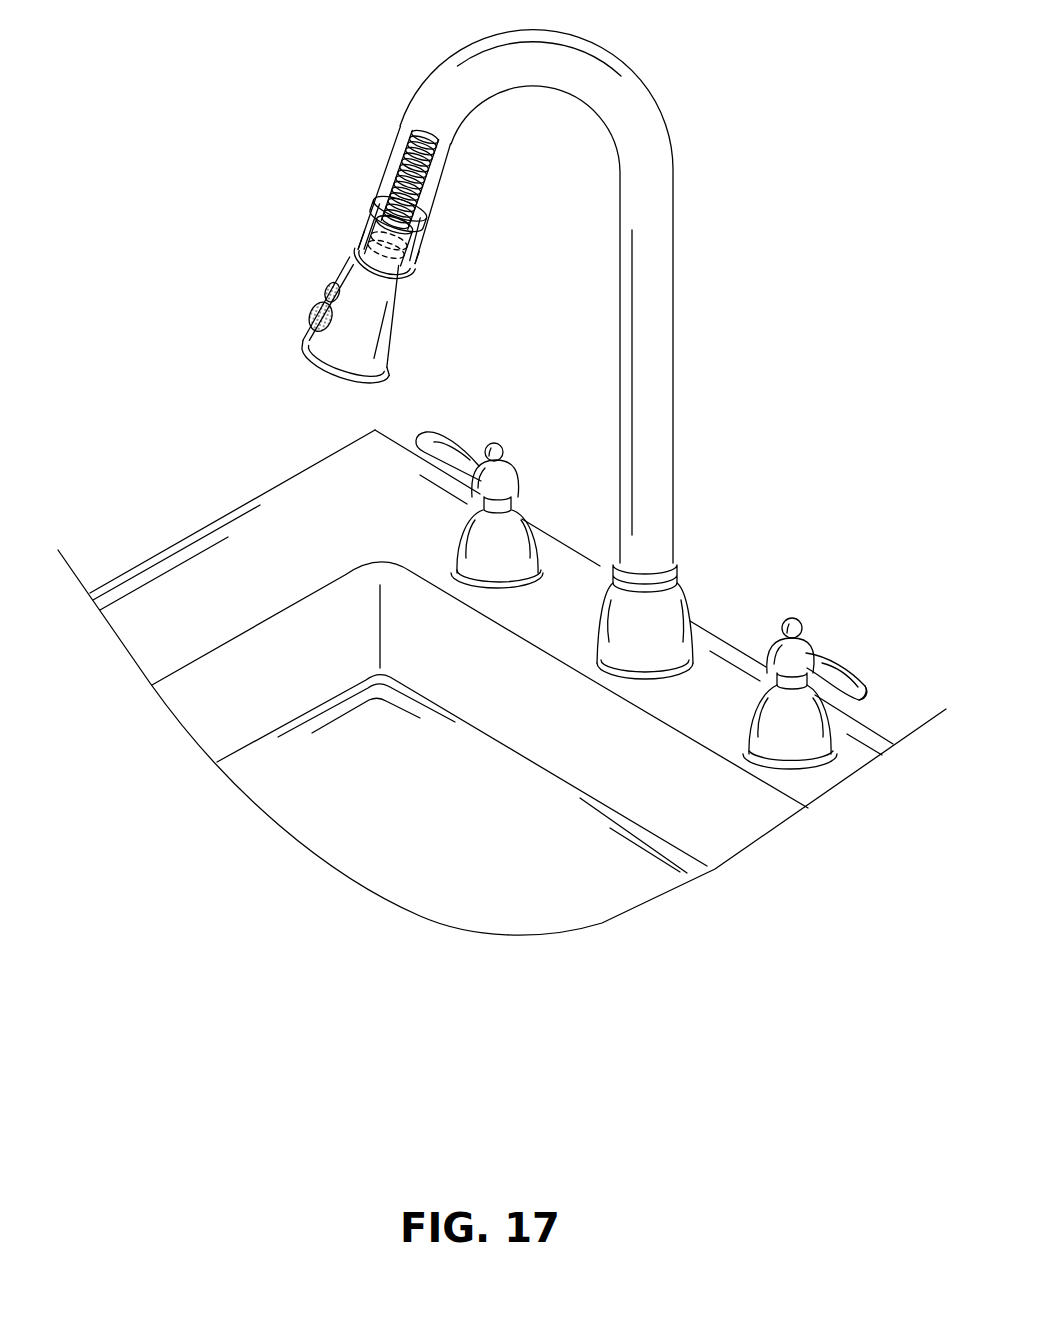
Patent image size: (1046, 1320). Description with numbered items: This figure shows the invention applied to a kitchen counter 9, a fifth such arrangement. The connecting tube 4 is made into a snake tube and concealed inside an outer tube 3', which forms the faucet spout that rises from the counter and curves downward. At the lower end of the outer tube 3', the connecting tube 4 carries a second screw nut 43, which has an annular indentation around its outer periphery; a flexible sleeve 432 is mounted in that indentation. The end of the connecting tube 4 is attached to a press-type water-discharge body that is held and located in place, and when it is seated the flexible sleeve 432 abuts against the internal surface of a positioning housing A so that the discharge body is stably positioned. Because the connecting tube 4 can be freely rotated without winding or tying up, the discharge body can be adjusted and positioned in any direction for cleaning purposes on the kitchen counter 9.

The outer tube 3' is at (539, 342).
The connecting tube 4 is at (406, 149).
The second screw nut 43 is at (368, 226).
The flexible sleeve 432 is at (402, 254).
The positioning housing A is at (424, 239).
The kitchen counter 9 is at (617, 952).